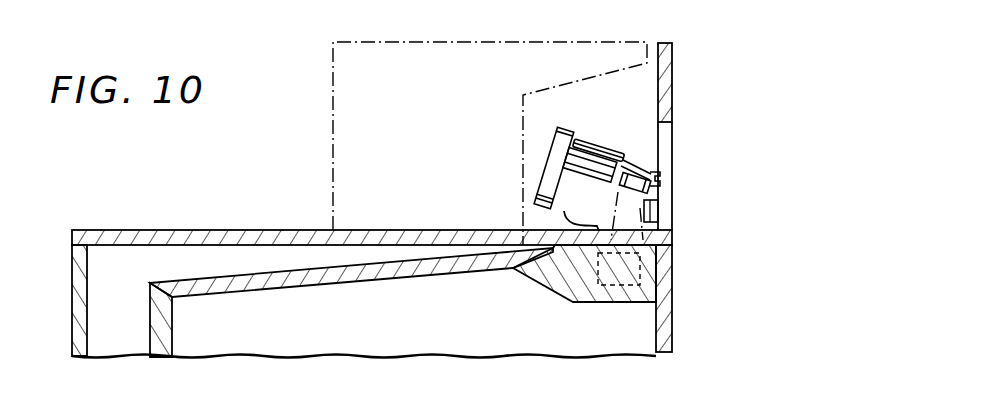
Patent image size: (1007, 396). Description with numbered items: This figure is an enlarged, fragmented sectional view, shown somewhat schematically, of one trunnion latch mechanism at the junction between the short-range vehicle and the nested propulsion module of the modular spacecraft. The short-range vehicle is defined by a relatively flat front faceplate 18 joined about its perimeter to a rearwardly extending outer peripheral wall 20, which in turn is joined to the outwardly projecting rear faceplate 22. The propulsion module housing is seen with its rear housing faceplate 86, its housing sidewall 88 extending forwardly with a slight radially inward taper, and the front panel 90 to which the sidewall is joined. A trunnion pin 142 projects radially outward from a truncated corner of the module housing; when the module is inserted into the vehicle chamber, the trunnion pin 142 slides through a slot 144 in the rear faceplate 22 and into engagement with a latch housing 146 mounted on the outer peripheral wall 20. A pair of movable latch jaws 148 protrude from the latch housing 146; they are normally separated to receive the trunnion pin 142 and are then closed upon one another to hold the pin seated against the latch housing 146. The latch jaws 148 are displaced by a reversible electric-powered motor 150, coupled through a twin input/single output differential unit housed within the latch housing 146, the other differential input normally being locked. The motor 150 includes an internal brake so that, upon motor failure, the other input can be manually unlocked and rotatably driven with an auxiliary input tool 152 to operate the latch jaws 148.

The front faceplate 18 is at (72, 269).
The outer peripheral wall 20 is at (235, 229).
The rear faceplate 22 is at (673, 71).
The rear housing faceplate 86 is at (673, 312).
The housing sidewall 88 is at (407, 270).
The front panel 90 is at (172, 344).
The trunnion pin 142 is at (610, 212).
The slot 144 is at (668, 136).
The latch housing 146 is at (568, 213).
The latch jaws 148 is at (660, 224).
The reversible electric-powered motor 150 is at (592, 152).
The auxiliary input tool 152 is at (661, 180).